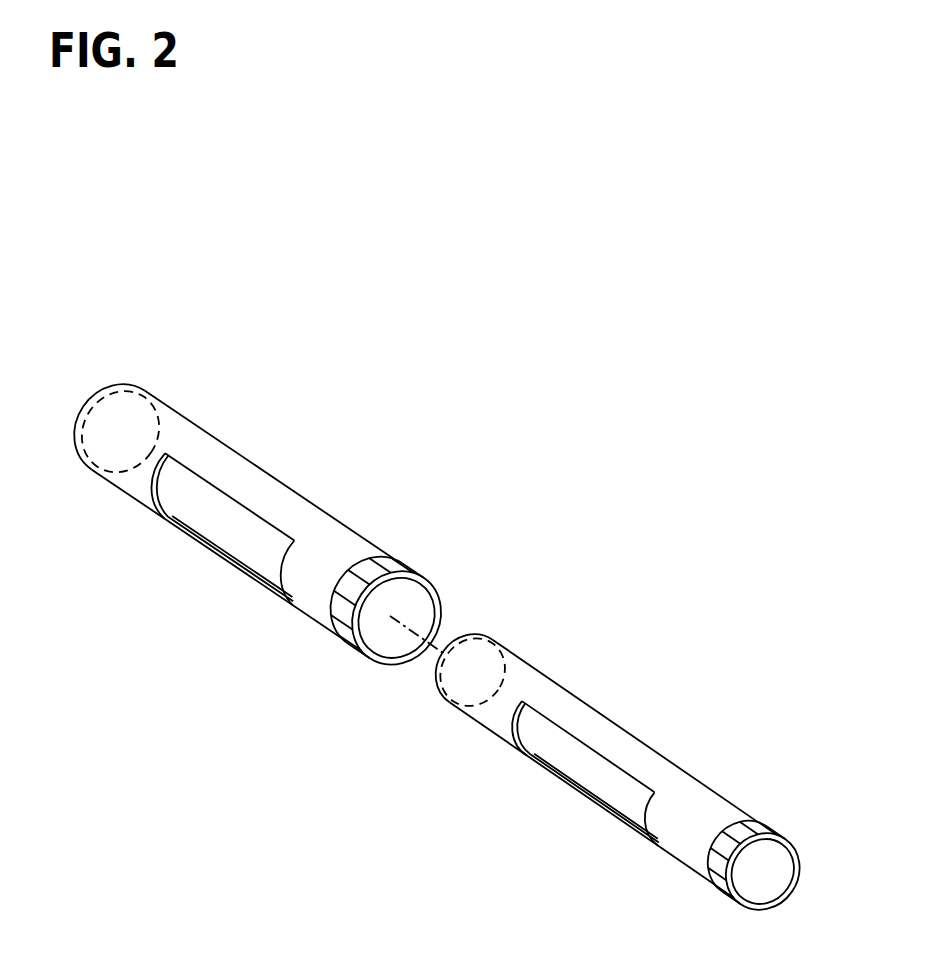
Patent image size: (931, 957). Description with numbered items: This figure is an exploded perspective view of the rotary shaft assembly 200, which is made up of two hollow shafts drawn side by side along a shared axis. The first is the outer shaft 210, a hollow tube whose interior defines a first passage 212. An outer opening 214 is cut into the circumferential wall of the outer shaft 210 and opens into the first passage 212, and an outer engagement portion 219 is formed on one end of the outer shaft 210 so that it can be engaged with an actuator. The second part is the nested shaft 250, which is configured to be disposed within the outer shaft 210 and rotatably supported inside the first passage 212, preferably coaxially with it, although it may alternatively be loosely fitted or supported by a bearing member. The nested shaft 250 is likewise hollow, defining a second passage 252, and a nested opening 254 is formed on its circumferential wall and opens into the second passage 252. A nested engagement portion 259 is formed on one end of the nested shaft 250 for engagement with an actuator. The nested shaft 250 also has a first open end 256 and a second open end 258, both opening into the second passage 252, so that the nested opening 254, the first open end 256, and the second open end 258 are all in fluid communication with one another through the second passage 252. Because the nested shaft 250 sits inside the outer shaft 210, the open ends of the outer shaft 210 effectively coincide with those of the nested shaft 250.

The rotary shaft assembly 200 is at (439, 450).
The outer shaft 210 is at (193, 415).
The first passage 212 is at (285, 498).
The outer opening 214 is at (200, 513).
The outer engagement portion 219 is at (393, 565).
The nested shaft 250 is at (605, 714).
The second passage 252 is at (679, 780).
The nested opening 254 is at (560, 758).
The first open end 256 is at (473, 657).
The second open end 258 is at (774, 856).
The nested engagement portion 259 is at (752, 829).